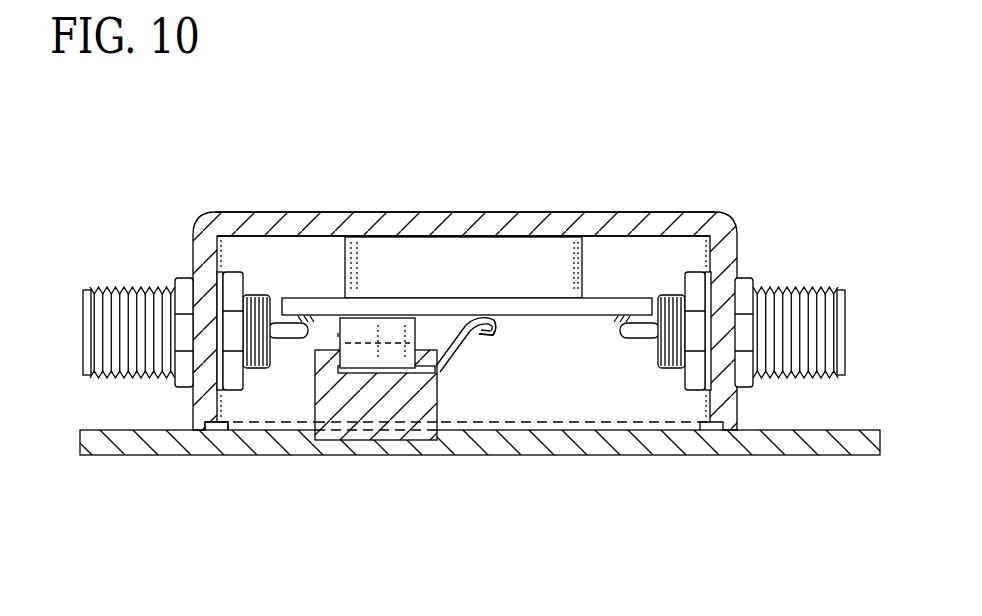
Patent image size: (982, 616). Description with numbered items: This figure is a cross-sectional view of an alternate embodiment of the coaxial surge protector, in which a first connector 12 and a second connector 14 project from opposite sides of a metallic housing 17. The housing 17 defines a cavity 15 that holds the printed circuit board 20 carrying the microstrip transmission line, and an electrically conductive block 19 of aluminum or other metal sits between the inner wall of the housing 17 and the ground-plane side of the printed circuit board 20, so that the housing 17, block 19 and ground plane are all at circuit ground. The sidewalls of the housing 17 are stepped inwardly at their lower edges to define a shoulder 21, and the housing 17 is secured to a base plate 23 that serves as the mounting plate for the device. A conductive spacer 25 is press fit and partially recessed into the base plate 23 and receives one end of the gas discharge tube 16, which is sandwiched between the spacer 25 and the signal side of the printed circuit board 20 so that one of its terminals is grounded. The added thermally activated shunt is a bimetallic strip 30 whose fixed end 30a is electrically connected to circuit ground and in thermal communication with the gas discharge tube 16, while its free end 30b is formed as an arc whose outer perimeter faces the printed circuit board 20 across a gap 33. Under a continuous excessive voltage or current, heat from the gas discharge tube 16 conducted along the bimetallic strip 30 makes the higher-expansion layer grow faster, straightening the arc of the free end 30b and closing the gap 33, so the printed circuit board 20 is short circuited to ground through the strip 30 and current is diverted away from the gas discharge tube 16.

The first connector 12 is at (82, 313).
The second connector 14 is at (846, 313).
The cavity 15 is at (266, 262).
The gas discharge tube 16 is at (338, 335).
The housing 17 is at (372, 211).
The electrically conductive block 19 is at (527, 262).
The printed circuit board 20 is at (596, 316).
The shoulder 21 is at (228, 437).
The base plate 23 is at (713, 456).
The spacer 25 is at (315, 386).
The bimetallic strip 30 is at (449, 422).
The fixed end 30a is at (375, 373).
The free end 30b is at (482, 328).
The gap 33 is at (498, 330).